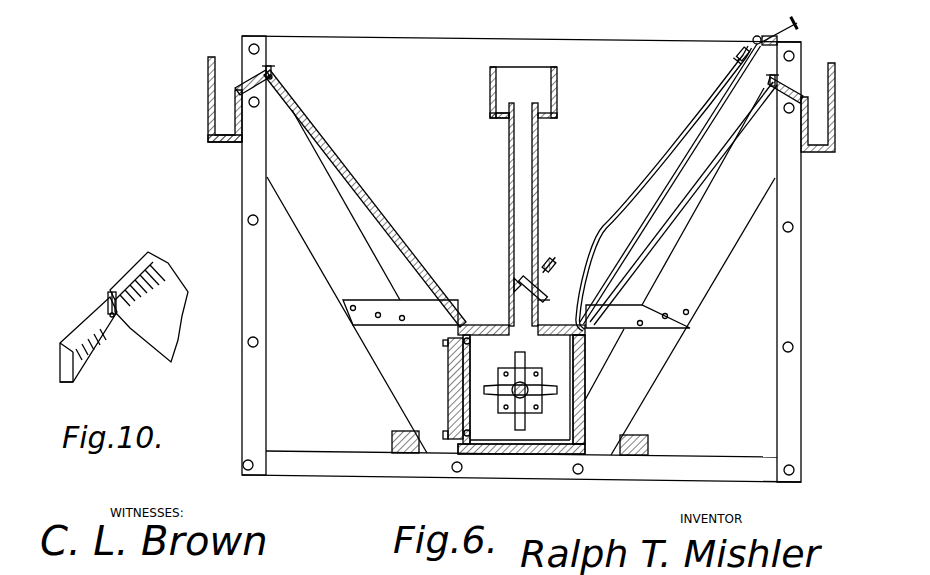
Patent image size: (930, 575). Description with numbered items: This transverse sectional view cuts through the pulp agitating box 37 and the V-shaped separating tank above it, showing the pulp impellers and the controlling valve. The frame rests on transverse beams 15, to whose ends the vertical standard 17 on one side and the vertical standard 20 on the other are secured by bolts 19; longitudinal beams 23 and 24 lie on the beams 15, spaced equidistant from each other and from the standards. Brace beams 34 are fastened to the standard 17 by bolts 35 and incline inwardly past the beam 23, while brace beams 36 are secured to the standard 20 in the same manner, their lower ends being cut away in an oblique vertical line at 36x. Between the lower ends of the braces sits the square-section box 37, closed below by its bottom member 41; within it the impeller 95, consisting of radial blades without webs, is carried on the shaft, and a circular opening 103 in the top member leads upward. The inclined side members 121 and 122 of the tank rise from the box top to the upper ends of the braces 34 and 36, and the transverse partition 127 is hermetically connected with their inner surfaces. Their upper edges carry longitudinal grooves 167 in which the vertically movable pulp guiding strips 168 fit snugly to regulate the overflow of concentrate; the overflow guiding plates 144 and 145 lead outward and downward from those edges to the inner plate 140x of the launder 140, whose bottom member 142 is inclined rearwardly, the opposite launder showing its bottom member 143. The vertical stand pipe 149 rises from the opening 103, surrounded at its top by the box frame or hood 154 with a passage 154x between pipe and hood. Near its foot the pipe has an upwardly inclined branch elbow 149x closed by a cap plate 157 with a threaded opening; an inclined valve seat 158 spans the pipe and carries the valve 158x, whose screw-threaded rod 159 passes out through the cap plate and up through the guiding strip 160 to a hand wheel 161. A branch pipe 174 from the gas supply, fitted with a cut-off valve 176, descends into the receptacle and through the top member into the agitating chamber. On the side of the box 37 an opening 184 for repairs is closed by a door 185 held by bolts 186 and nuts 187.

In FIG. 6, the beams 15 is at (693, 473).
In FIG. 6, the vertical standard 17 is at (250, 308).
In FIG. 6, the bolts 19 is at (243, 466).
In FIG. 6, the vertical standard 20 is at (790, 297).
In FIG. 6, the longitudinal beam 23 is at (392, 443).
In FIG. 6, the longitudinal beam 24 is at (648, 443).
In FIG. 6, the brace beams 34 is at (338, 270).
In FIG. 6, the bolts 35 is at (258, 106).
In FIG. 6, the brace beams 36 is at (697, 292).
In FIG. 6, the oblique vertical surface 36x is at (587, 410).
In FIG. 6, the pulp agitating case or box 37 is at (482, 402).
In FIG. 6, the bottom member 41 is at (522, 456).
In FIG. 6, the pulp impellers 95 is at (522, 420).
In FIG. 6, the opening 103 is at (486, 389).
In FIG. 6, the side member 121 is at (386, 232).
In FIG. 10, the side member 121 is at (156, 365).
In FIG. 6, the side member 122 is at (690, 193).
In FIG. 6, the transverse partition 127 is at (594, 50).
In FIG. 6, the concentrate discharging box or launder 140 is at (208, 127).
In FIG. 10, the inner side member or plate of launder 140x is at (68, 383).
In FIG. 6, the bottom member 142 is at (226, 143).
In FIG. 6, the bottom member 143 is at (825, 153).
In FIG. 6, the longitudinal plate 144 is at (243, 83).
In FIG. 10, the longitudinal plate 144 is at (88, 334).
In FIG. 6, the longitudinal plate 145 is at (798, 94).
In FIG. 6, the pulp conducting stand pipe 149 is at (524, 165).
In FIG. 6, the branch elbow 149x is at (568, 292).
In FIG. 6, the box frame or hood 154 is at (558, 91).
In FIG. 6, the passage 154x is at (508, 112).
In FIG. 6, the cap plate 157 is at (546, 258).
In FIG. 6, the valve seat 158 is at (544, 298).
In FIG. 6, the valve 158x is at (513, 282).
In FIG. 6, the rod 159 is at (665, 158).
In FIG. 6, the guiding strip 160 is at (757, 36).
In FIG. 6, the hand wheel 161 is at (796, 26).
In FIG. 6, the longitudinal grooves 167 is at (275, 78).
In FIG. 10, the longitudinal grooves 167 is at (113, 318).
In FIG. 6, the pulp guiding strips 168 is at (273, 72).
In FIG. 10, the pulp guiding strips 168 is at (133, 268).
In FIG. 6, the branch pipes 174 is at (647, 212).
In FIG. 6, the cut-off valve 176 is at (737, 54).
In FIG. 6, the openings 184 is at (435, 372).
In FIG. 6, the doors 185 is at (452, 386).
In FIG. 6, the bolts 186 is at (447, 348).
In FIG. 6, the nuts 187 is at (443, 340).